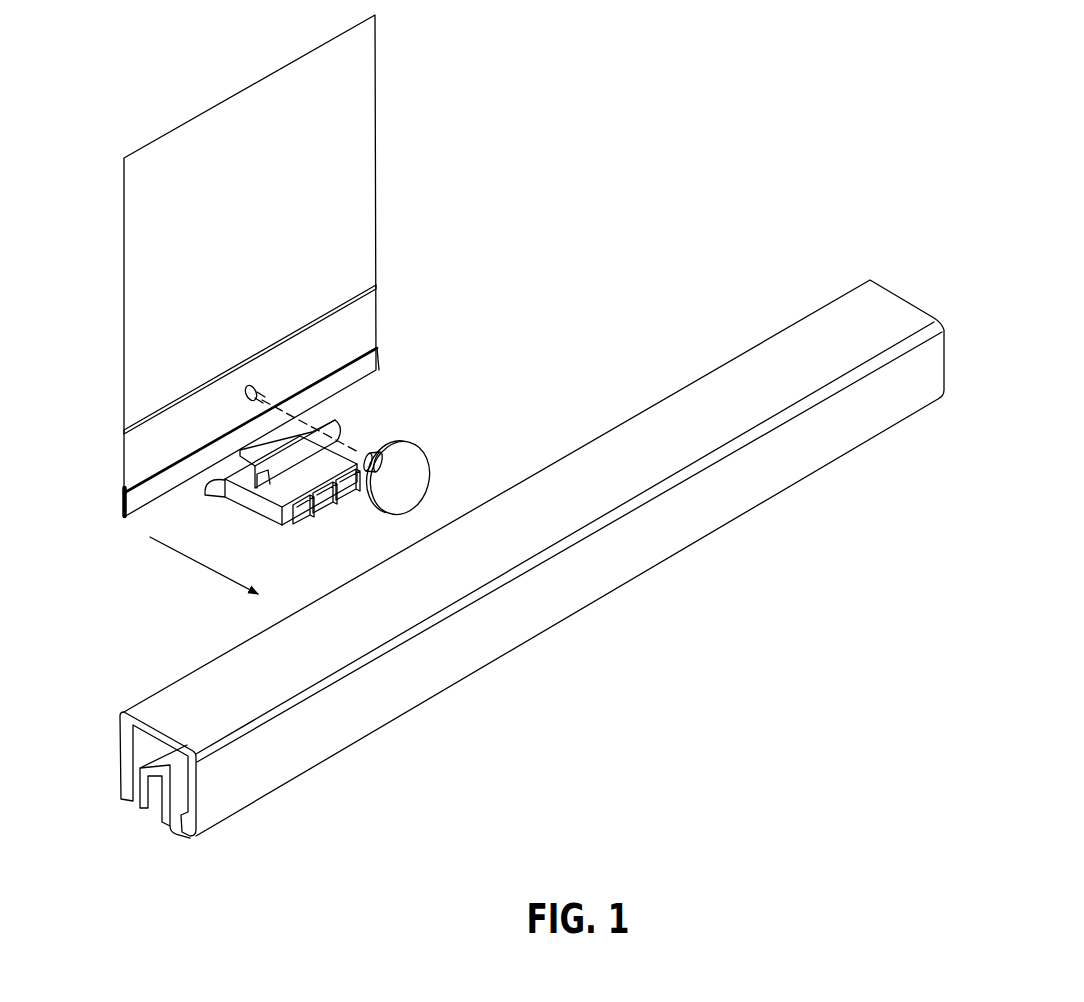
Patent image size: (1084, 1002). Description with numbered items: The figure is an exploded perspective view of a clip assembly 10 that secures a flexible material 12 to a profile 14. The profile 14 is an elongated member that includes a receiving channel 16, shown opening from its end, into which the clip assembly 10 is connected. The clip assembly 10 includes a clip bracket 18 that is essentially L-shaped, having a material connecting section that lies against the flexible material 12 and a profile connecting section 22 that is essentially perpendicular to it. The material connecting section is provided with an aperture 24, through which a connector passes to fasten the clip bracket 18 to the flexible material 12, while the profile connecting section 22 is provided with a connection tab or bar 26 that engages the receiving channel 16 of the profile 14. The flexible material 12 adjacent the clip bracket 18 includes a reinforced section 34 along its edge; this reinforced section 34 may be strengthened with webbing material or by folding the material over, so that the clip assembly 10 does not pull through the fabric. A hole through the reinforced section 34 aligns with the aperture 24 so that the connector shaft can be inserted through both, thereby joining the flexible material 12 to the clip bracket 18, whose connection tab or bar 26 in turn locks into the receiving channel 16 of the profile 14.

The clip assembly 10 is at (86, 367).
The flexible material 12 is at (367, 156).
The profile 14 is at (615, 572).
The receiving channel 16 is at (143, 812).
The clip bracket 18 is at (508, 443).
The profile connecting section 22 is at (213, 486).
The aperture 24 is at (258, 392).
The connection tab or bar 26 is at (275, 468).
The reinforced section 34 is at (100, 510).